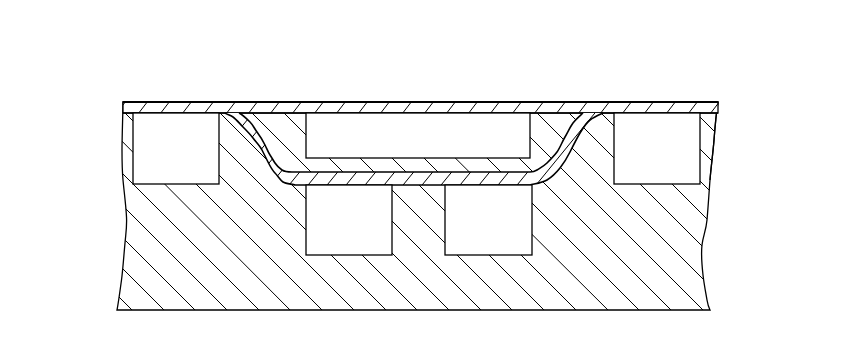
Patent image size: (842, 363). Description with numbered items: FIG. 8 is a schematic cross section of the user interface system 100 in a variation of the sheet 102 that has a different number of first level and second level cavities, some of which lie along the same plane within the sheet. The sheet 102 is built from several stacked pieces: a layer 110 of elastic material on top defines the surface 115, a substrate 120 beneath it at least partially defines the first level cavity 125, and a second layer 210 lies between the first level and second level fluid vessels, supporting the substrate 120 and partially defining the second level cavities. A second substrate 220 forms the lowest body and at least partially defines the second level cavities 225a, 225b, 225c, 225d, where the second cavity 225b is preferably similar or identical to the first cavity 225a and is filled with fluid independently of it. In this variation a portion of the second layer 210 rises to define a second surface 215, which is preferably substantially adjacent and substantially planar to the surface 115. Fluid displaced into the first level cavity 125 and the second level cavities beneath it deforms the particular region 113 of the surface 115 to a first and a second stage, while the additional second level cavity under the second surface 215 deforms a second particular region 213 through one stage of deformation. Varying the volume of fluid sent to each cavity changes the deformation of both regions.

The user interface system 100 is at (96, 64).
The sheet 102 is at (111, 308).
The layer 110 is at (317, 108).
The particular region 113 is at (432, 97).
The surface 115 is at (563, 137).
The substrate 120 is at (568, 108).
The first level cavity 125 is at (400, 148).
The second layer 210 is at (163, 108).
The second particular region 213 is at (651, 94).
The second surface 215 is at (695, 102).
The second substrate 220 is at (247, 273).
The first cavity 225a is at (153, 160).
The second cavity 225b is at (326, 233).
The conductive region 225c is at (464, 233).
The conductive region 225d is at (634, 162).